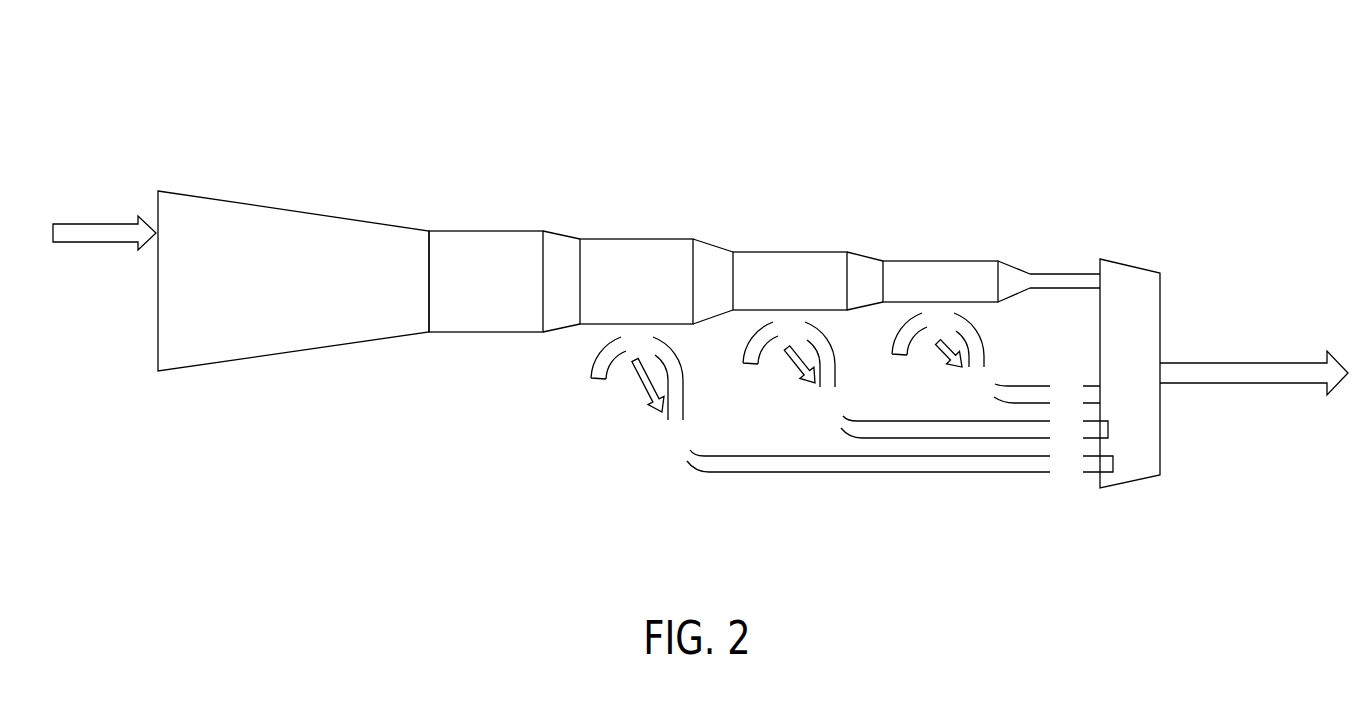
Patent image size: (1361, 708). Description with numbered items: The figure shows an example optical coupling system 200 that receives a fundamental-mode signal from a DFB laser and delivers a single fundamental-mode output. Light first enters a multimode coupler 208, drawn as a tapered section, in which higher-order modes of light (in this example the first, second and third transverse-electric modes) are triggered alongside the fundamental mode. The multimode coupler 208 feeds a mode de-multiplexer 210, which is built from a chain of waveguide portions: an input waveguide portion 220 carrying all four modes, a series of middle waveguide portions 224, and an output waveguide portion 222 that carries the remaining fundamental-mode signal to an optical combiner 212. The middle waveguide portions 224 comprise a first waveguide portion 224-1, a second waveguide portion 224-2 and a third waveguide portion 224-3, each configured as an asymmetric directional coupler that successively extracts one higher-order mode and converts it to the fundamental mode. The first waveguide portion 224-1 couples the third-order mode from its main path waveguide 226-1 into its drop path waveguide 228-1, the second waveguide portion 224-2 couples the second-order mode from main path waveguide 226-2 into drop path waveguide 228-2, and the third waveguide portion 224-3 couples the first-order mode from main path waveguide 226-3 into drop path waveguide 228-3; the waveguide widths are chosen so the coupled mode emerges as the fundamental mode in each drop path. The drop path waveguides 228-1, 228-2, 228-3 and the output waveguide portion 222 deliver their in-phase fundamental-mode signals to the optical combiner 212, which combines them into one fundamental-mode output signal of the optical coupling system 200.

The optical coupling system 200 is at (700, 301).
The multimode coupler 208 is at (223, 352).
The mode de-multiplexer 210 is at (729, 288).
The optical combiner 212 is at (1127, 472).
The input waveguide portion 220 is at (480, 240).
The output waveguide portion 222 is at (1068, 283).
The middle waveguide portions 224 is at (845, 442).
The first waveguide portion 224-1 is at (618, 217).
The second waveguide portion 224-2 is at (770, 218).
The third waveguide portion 224-3 is at (922, 218).
The main path waveguide 226-1 is at (680, 250).
The main path waveguide 226-2 is at (830, 260).
The main path waveguide 226-3 is at (975, 270).
The drop path waveguide 228-1 is at (667, 455).
The drop path waveguide 228-2 is at (826, 418).
The drop path waveguide 228-3 is at (980, 400).